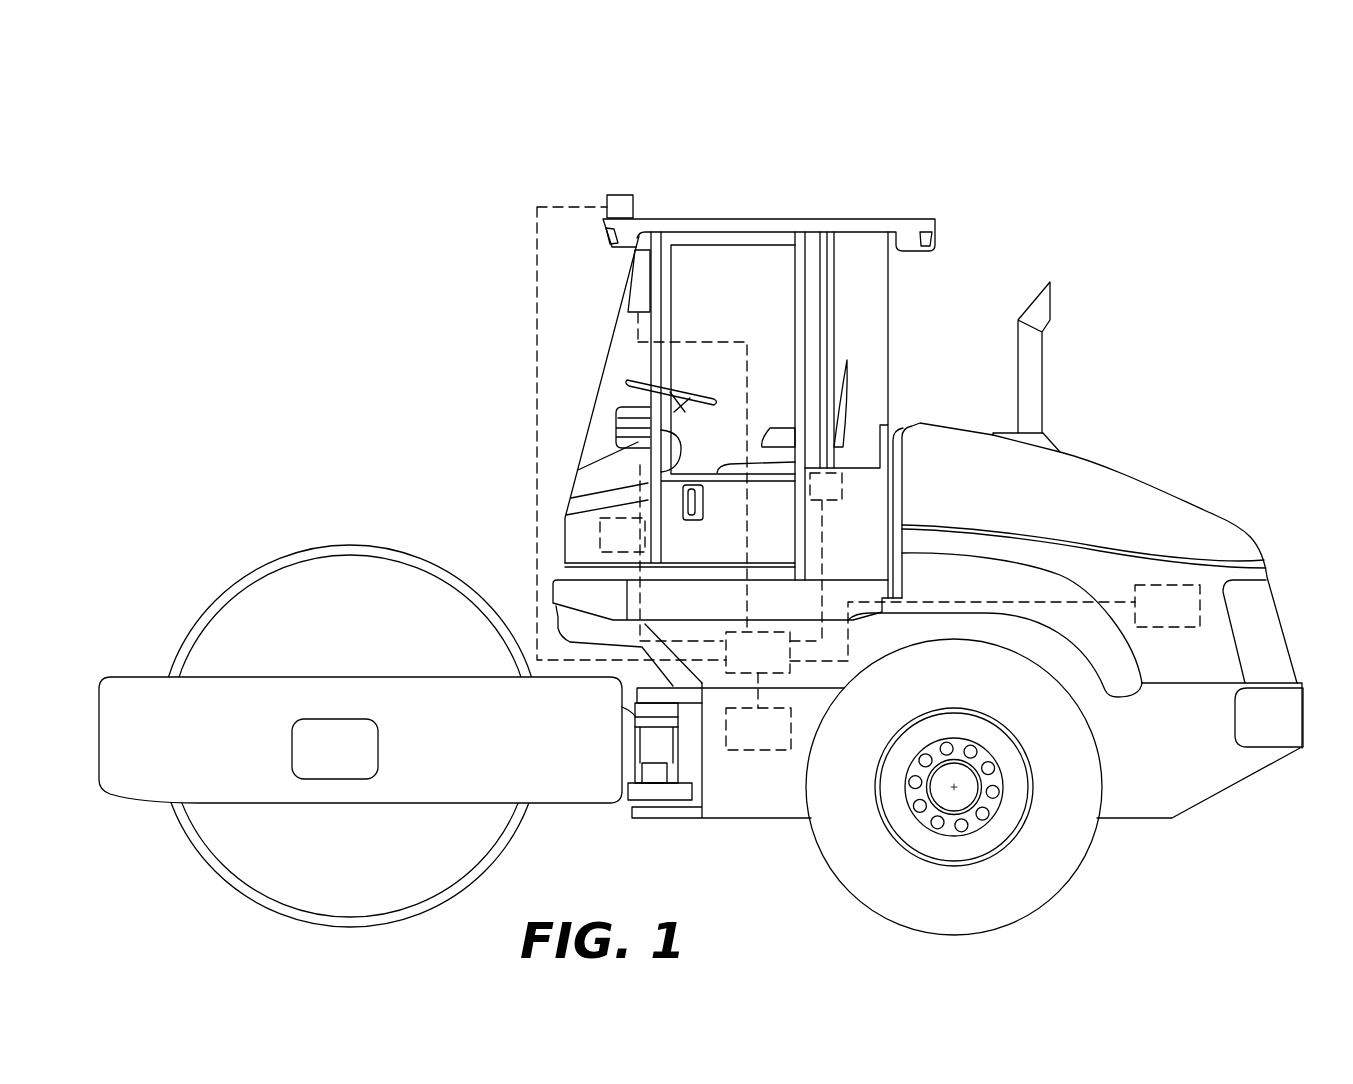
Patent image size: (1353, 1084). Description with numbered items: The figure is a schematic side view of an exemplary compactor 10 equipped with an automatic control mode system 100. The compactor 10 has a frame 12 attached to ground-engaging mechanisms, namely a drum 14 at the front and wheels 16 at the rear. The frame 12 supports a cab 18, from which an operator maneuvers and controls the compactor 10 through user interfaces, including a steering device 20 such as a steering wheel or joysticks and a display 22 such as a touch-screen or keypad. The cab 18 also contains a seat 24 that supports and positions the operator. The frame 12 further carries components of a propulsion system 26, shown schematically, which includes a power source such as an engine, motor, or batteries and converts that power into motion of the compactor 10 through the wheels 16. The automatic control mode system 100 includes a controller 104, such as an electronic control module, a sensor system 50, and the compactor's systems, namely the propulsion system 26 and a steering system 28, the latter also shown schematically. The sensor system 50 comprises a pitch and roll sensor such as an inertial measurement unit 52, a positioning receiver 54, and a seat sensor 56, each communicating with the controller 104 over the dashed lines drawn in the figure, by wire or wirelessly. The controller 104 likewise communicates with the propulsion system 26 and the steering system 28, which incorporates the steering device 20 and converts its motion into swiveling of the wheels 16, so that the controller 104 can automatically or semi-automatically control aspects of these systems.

The compactor 10 is at (701, 487).
The frame 12 is at (701, 564).
The drum 14 is at (350, 736).
The wheels 16 is at (986, 787).
The cab 18 is at (750, 365).
The steering device 20 is at (671, 491).
The display 22 is at (607, 296).
The seat 24 is at (884, 403).
The propulsion system 26 is at (1167, 606).
The steering system 28 is at (622, 535).
The sensor system 50 is at (599, 387).
The inertial measurement unit 52 is at (758, 729).
The positioning receiver 54 is at (621, 169).
The seat sensor 56 is at (824, 557).
The automatic control mode system 100 is at (724, 432).
The controller 104 is at (930, 655).